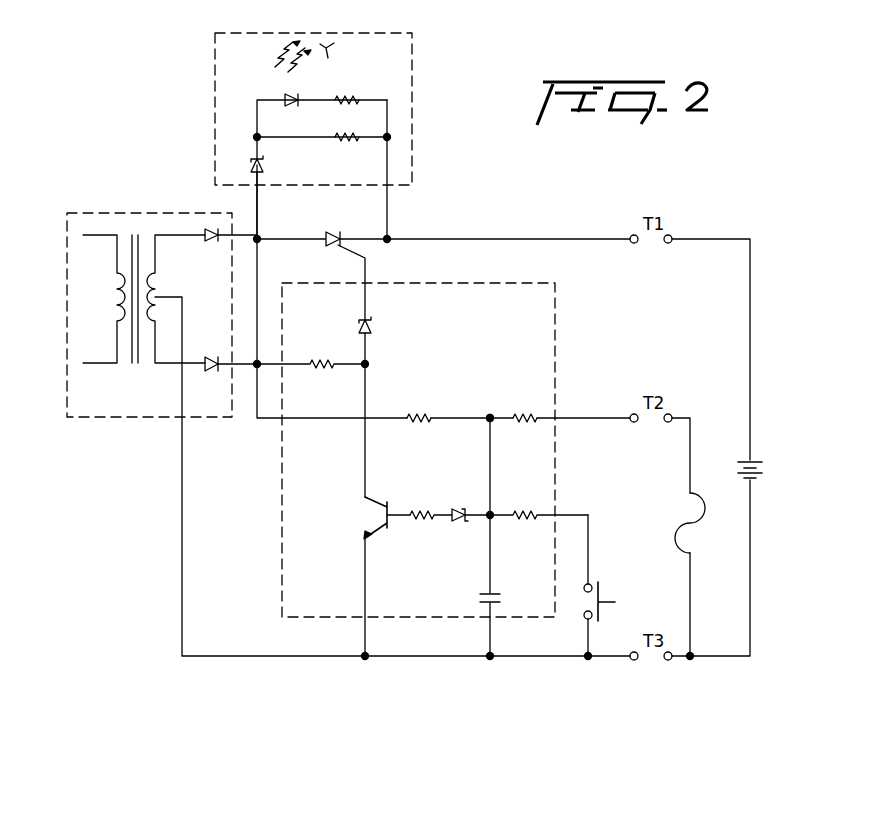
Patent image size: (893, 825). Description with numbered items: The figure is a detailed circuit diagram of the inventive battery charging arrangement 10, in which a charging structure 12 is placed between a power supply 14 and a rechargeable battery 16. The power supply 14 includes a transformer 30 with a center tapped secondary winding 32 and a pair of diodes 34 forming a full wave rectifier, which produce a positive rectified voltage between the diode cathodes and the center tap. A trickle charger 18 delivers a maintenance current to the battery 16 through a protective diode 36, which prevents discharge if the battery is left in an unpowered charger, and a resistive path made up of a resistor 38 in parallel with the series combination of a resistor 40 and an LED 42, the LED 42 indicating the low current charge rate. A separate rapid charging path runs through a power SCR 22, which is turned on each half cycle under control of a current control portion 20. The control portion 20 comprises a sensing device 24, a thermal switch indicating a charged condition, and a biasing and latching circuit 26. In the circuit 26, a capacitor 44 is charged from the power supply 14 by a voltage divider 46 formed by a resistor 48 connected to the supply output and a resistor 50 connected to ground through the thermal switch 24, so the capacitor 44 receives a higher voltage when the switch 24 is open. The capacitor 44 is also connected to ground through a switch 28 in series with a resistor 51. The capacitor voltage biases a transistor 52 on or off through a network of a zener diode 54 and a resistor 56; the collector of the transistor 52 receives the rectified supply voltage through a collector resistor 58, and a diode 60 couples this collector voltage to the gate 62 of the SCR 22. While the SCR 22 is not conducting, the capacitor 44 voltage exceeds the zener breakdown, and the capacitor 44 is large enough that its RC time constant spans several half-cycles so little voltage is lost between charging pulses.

The inventive arrangement 10 is at (712, 173).
The charging structure 12 is at (512, 202).
The power supply 14 is at (118, 213).
The rechargeable battery 16 is at (763, 470).
The trickle charger 18 is at (415, 43).
The current control portion 20 is at (652, 345).
The power SCR 22 is at (331, 232).
The sensing device 24 is at (676, 525).
The biasing and latching circuit 26 is at (556, 318).
The switch 28 is at (603, 597).
The transformer 30 is at (132, 362).
The center tapped secondary winding 32 is at (160, 278).
The diodes 34 is at (211, 244).
The protective diode 36 is at (265, 166).
The resistor 38 is at (352, 136).
The resistor 40 is at (346, 98).
The LED 42 is at (291, 105).
The capacitor 44 is at (501, 598).
The voltage divider 46 is at (487, 412).
The resistor 48 is at (416, 415).
The resistor 50 is at (519, 415).
The resistor 51 is at (520, 512).
The transistor 52 is at (372, 500).
The zener diode 54 is at (460, 528).
The resistor 56 is at (418, 512).
The collector resistor 58 is at (317, 362).
The diode 60 is at (372, 326).
The gate 62 is at (349, 252).